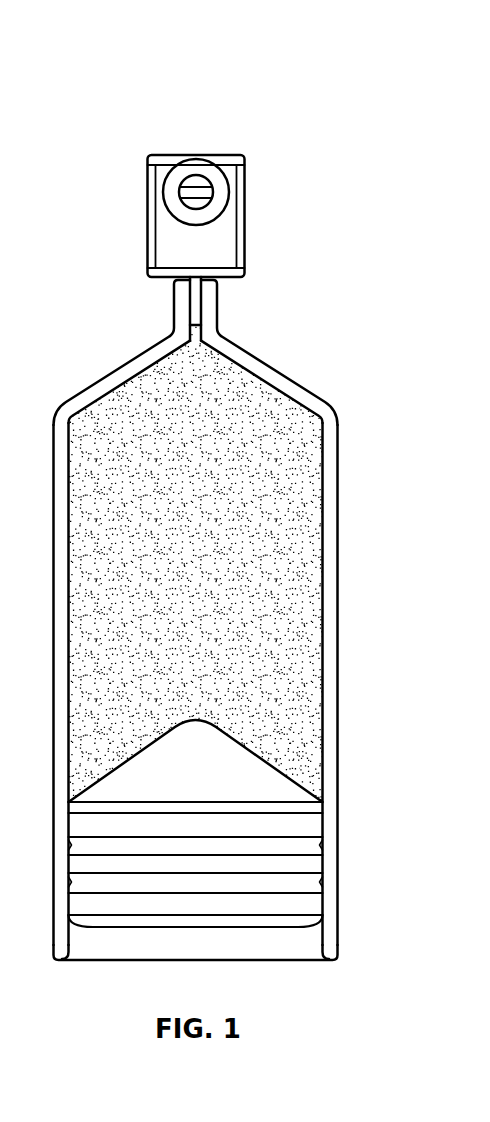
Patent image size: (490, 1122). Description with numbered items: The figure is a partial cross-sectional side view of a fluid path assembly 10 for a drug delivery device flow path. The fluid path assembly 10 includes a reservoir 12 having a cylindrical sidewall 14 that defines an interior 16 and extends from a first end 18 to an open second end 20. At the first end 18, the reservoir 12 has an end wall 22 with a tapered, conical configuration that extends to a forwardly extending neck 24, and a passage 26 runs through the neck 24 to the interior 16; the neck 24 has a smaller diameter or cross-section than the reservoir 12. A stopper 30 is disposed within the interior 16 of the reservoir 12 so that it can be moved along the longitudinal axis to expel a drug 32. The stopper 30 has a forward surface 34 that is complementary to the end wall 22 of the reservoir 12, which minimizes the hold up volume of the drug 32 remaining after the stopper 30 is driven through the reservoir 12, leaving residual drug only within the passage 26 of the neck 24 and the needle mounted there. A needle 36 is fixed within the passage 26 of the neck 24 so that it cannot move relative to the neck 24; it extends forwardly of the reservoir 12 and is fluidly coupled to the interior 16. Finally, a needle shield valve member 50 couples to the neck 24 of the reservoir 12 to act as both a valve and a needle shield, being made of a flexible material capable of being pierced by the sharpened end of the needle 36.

The fluid path assembly 10 is at (253, 62).
The reservoir 12 is at (338, 597).
The cylindrical sidewall 14 is at (338, 517).
The interior 16 is at (283, 690).
The first end 18 is at (317, 398).
The open second end 20 is at (280, 967).
The end wall 22 is at (90, 394).
The neck 24 is at (222, 333).
The passage 26 is at (190, 333).
The stopper 30 is at (298, 825).
The drug 32 is at (219, 567).
The forward surface 34 is at (232, 770).
The needle 36 is at (201, 307).
The needle shield valve member 50 is at (148, 207).